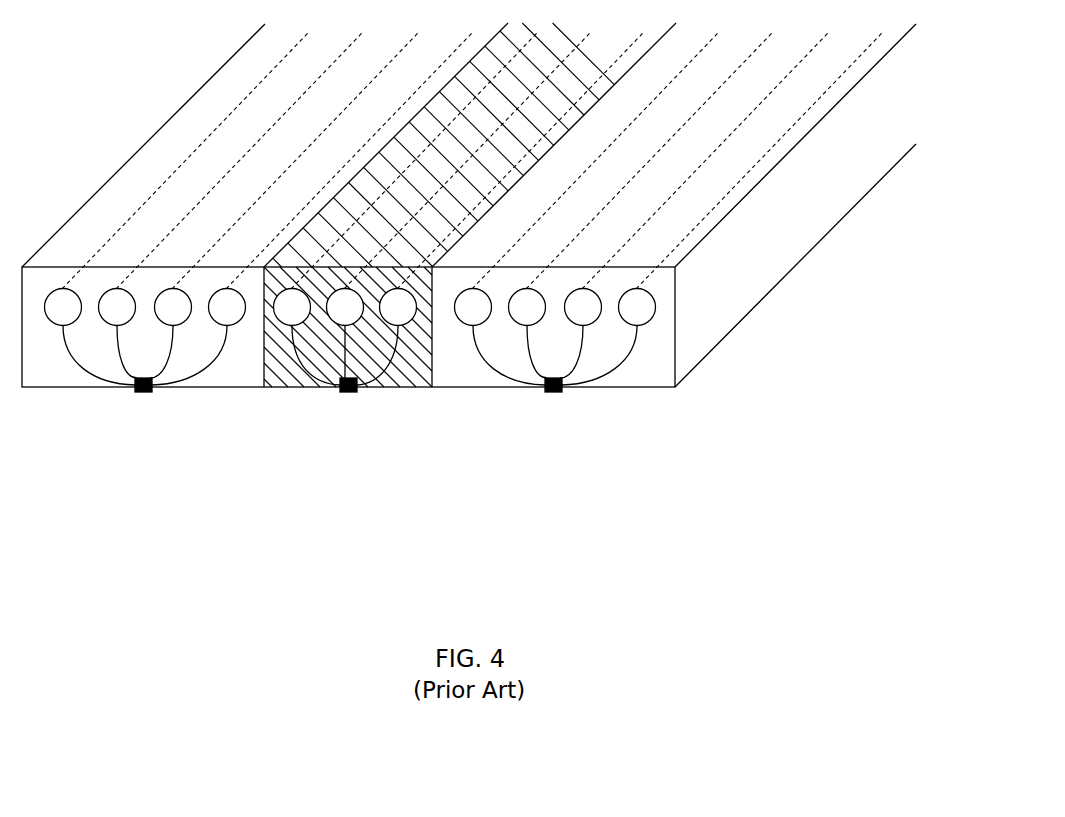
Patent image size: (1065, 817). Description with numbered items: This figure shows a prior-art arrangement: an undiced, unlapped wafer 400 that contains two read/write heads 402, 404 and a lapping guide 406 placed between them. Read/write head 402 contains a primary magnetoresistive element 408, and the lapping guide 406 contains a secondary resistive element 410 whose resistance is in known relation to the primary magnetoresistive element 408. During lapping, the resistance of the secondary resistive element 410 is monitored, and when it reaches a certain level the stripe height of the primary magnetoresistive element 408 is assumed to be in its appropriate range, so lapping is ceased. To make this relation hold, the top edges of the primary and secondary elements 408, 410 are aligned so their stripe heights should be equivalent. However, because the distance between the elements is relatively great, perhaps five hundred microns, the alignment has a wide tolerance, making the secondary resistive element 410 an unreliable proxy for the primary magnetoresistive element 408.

The wafer 400 is at (206, 520).
The read/write head 402 is at (242, 375).
The read/write head 404 is at (637, 367).
The lapping guide 406 is at (410, 383).
The primary magnetoresistive element 408 is at (135, 393).
The secondary resistive element 410 is at (345, 393).